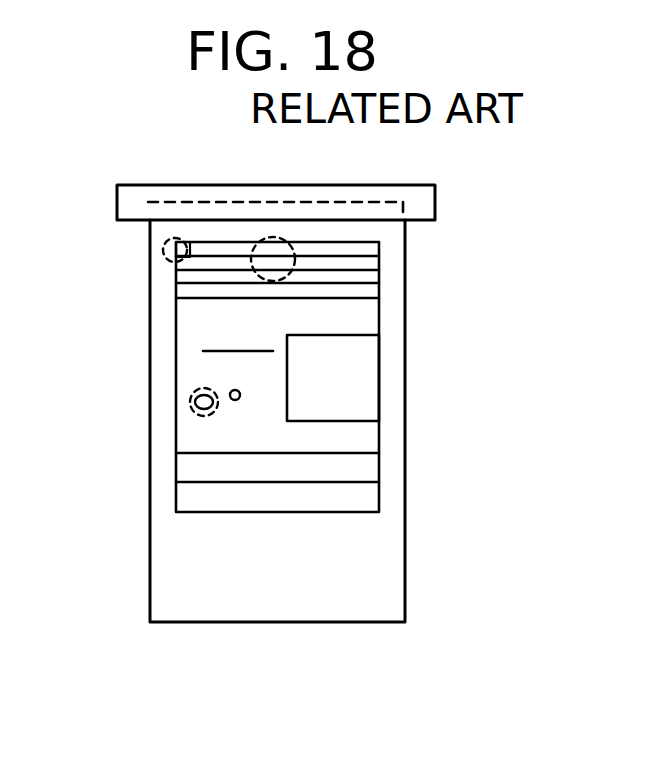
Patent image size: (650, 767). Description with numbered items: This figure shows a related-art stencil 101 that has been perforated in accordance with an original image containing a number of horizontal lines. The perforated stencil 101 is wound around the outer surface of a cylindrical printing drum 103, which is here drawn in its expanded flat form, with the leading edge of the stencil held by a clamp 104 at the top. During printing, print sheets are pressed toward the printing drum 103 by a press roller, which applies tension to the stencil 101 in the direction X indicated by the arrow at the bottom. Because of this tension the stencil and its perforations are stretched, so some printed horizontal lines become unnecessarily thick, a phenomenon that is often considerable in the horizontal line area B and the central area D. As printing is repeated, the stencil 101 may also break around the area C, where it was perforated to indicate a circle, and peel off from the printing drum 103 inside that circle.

The clamp 104 is at (125, 200).
The printing drum 103 is at (172, 551).
The stencil 101 is at (187, 323).
The horizontal line area B is at (164, 252).
The circle area C is at (190, 398).
The central area D is at (275, 233).
The direction X is at (277, 664).